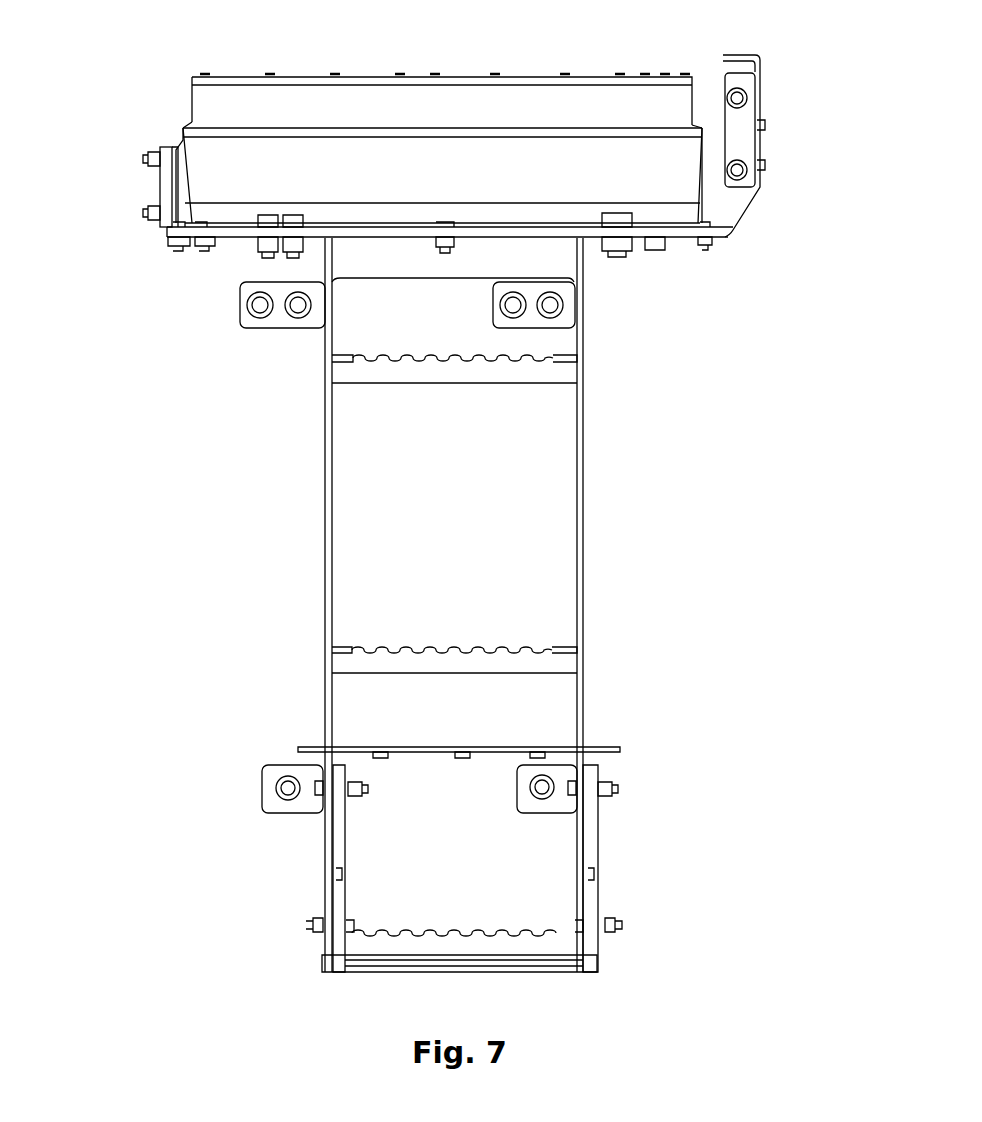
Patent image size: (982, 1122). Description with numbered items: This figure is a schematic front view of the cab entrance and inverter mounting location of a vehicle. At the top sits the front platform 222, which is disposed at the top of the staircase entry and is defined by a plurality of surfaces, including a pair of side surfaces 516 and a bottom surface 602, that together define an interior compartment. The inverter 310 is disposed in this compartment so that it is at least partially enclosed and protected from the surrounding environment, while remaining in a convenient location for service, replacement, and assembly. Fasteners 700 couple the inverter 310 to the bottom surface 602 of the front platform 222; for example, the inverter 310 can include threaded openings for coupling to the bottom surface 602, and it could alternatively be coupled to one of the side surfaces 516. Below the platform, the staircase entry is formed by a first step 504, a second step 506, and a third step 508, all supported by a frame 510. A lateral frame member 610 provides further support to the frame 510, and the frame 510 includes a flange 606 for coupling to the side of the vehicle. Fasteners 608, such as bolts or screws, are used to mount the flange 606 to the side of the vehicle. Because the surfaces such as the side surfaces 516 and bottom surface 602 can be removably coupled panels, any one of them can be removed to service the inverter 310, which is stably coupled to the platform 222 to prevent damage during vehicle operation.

The front platform 222 is at (110, 155).
The inverter 310 is at (490, 97).
The side surfaces 516 is at (158, 183).
The bottom surface 602 is at (682, 240).
The fasteners 700 is at (270, 258).
The frame 510 is at (582, 510).
The third step 508 is at (455, 362).
The second step 506 is at (452, 648).
The lateral frame member 610 is at (427, 747).
The flange 606 is at (282, 770).
The fasteners 608 is at (278, 787).
The first step 504 is at (452, 937).